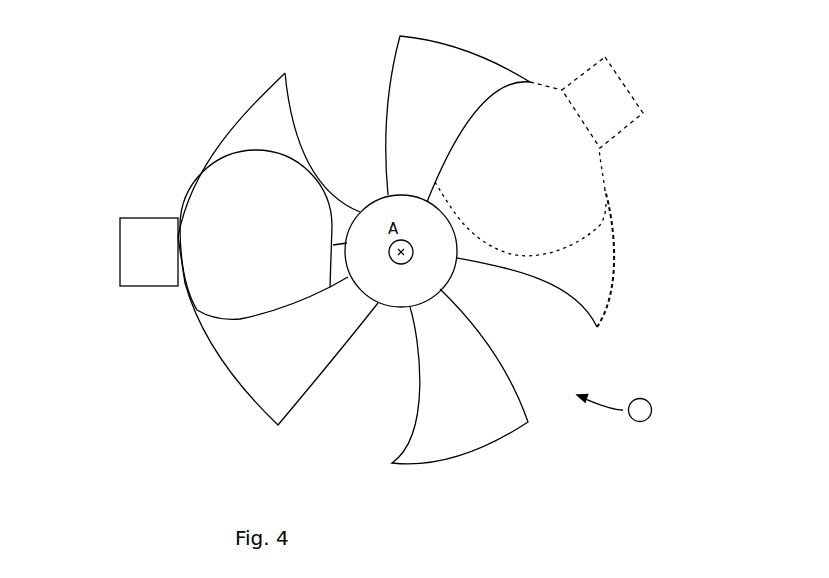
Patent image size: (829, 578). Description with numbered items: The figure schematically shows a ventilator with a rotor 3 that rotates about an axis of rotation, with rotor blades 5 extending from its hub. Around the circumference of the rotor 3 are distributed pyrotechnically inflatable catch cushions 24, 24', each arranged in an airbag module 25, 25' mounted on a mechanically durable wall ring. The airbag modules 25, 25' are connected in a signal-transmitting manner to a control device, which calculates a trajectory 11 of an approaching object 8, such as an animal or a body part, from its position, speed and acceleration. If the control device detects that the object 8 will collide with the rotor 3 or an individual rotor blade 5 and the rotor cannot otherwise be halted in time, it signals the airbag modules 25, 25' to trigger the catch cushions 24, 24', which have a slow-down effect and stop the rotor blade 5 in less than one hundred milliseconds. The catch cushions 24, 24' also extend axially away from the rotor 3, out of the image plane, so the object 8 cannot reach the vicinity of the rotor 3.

The rotor 3 is at (639, 273).
The rotor blade 5 is at (240, 362).
The object 8 is at (650, 403).
The trajectory 11 is at (610, 408).
The pyrotechnically inflatable catch cushion 24 is at (215, 205).
The pyrotechnically inflatable catch cushion 24' is at (577, 219).
The airbag module 25 is at (113, 236).
The airbag module 25' is at (638, 102).